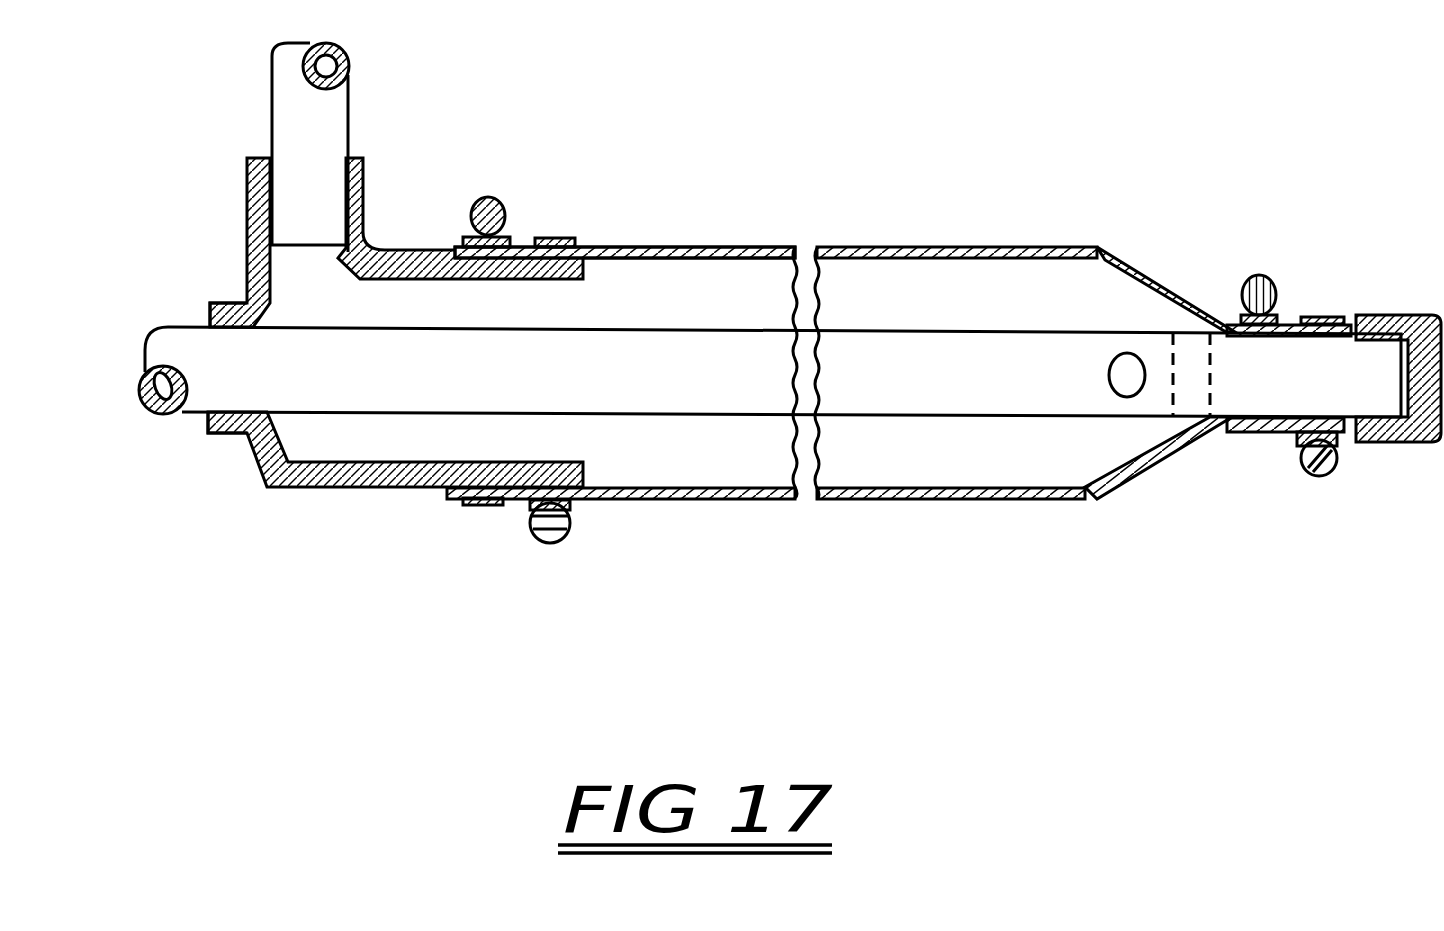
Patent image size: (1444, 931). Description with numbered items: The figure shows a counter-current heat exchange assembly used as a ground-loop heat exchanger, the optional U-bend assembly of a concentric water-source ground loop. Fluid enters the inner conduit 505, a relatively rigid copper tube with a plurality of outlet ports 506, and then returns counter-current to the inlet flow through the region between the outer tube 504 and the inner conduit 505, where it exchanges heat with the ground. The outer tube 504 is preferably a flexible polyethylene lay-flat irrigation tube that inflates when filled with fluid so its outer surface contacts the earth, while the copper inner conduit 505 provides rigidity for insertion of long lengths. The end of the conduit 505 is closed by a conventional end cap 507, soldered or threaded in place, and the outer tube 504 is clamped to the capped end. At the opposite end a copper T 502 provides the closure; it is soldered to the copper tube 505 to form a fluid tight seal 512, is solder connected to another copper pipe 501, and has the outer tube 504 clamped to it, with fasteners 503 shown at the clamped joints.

The copper pipe 501 is at (270, 100).
The copper T 502 is at (393, 252).
The fastening bolts 503 is at (553, 238).
The outer tube 504 is at (920, 246).
The conduit 505 is at (1028, 332).
The outlet ports 506 is at (1180, 340).
The end cap 507 is at (1396, 315).
The fluid tight seal 512 is at (202, 323).